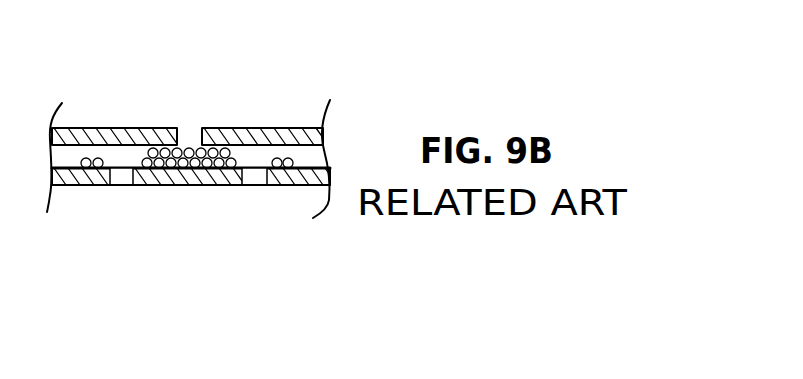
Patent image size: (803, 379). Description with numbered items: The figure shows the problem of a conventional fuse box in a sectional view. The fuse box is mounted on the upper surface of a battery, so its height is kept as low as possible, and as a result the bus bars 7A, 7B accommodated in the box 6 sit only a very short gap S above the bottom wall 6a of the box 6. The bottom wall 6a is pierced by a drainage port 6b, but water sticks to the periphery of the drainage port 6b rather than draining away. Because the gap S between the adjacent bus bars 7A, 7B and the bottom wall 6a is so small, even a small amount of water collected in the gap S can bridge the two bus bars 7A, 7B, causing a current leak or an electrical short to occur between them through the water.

The box 6 is at (191, 187).
The bottom wall 6a is at (178, 188).
The drainage port 6b is at (191, 263).
The bus bar 7A is at (152, 128).
The bus bar 7B is at (220, 128).
The gap S is at (312, 160).